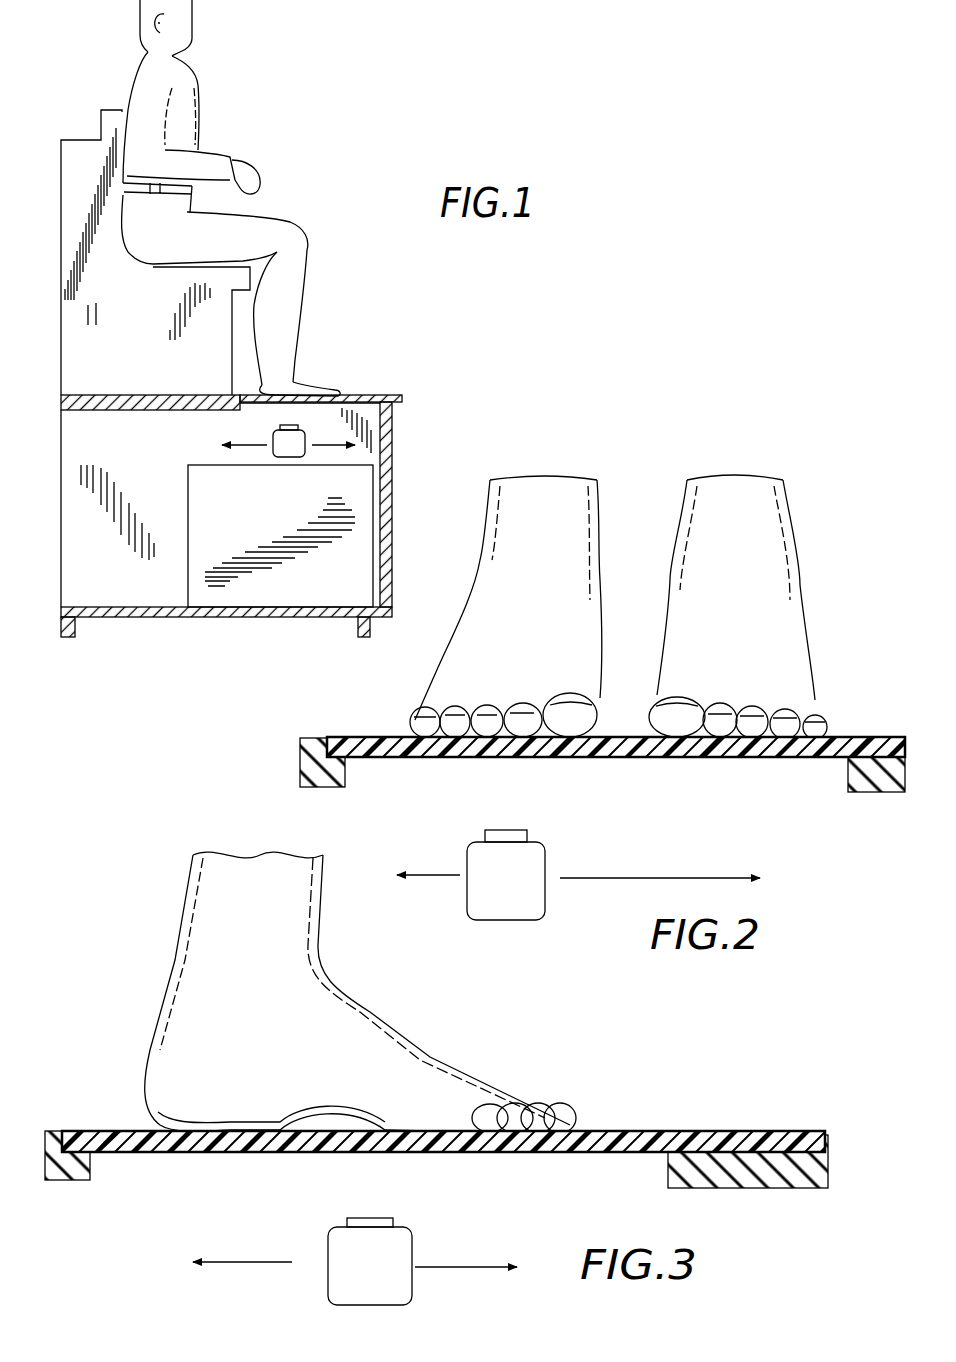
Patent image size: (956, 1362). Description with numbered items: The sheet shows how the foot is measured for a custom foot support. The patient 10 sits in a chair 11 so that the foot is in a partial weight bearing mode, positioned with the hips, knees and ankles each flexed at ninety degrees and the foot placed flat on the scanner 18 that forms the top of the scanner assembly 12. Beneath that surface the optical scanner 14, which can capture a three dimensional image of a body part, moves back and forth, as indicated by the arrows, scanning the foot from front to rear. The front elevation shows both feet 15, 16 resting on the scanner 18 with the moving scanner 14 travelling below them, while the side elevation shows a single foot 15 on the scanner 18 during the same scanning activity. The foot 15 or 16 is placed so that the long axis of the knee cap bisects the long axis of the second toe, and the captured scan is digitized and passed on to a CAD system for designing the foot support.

In FIG. 1, the patient 10 is at (213, 125).
In FIG. 1, the chair 11 is at (152, 334).
In FIG. 1, the scanner assembly 12 is at (340, 393).
In FIG. 1, the optical scanner 14 is at (288, 457).
In FIG. 2, the optical scanner 14 is at (547, 865).
In FIG. 3, the optical scanner 14 is at (395, 1265).
In FIG. 2, the foot 15 is at (541, 636).
In FIG. 3, the foot 15 is at (280, 1053).
In FIG. 2, the foot 16 is at (740, 636).
In FIG. 2, the scanner plate 18 is at (553, 760).
In FIG. 3, the scanner plate 18 is at (595, 1133).